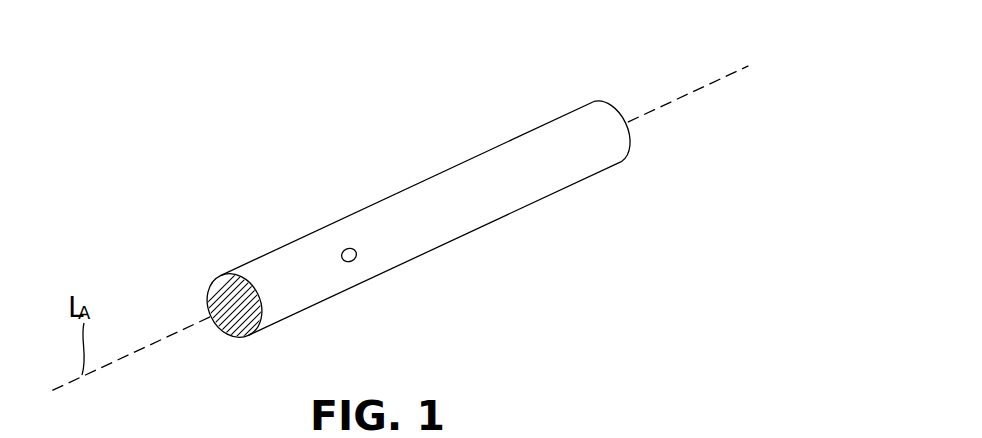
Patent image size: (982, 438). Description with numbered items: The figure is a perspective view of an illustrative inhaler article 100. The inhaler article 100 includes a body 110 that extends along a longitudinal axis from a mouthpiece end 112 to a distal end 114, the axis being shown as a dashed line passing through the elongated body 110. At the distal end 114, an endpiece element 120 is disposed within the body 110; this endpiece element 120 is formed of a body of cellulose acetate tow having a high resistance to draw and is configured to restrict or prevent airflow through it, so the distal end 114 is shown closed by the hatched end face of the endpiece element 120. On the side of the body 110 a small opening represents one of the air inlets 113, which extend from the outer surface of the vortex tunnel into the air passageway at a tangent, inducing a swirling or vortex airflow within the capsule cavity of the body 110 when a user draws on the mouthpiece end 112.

The inhaler article 100 is at (358, 164).
The body 110 is at (497, 170).
The mouthpiece end 112 is at (595, 96).
The air inlets 113 is at (351, 262).
The distal end 114 is at (239, 350).
The endpiece element 120 is at (231, 286).